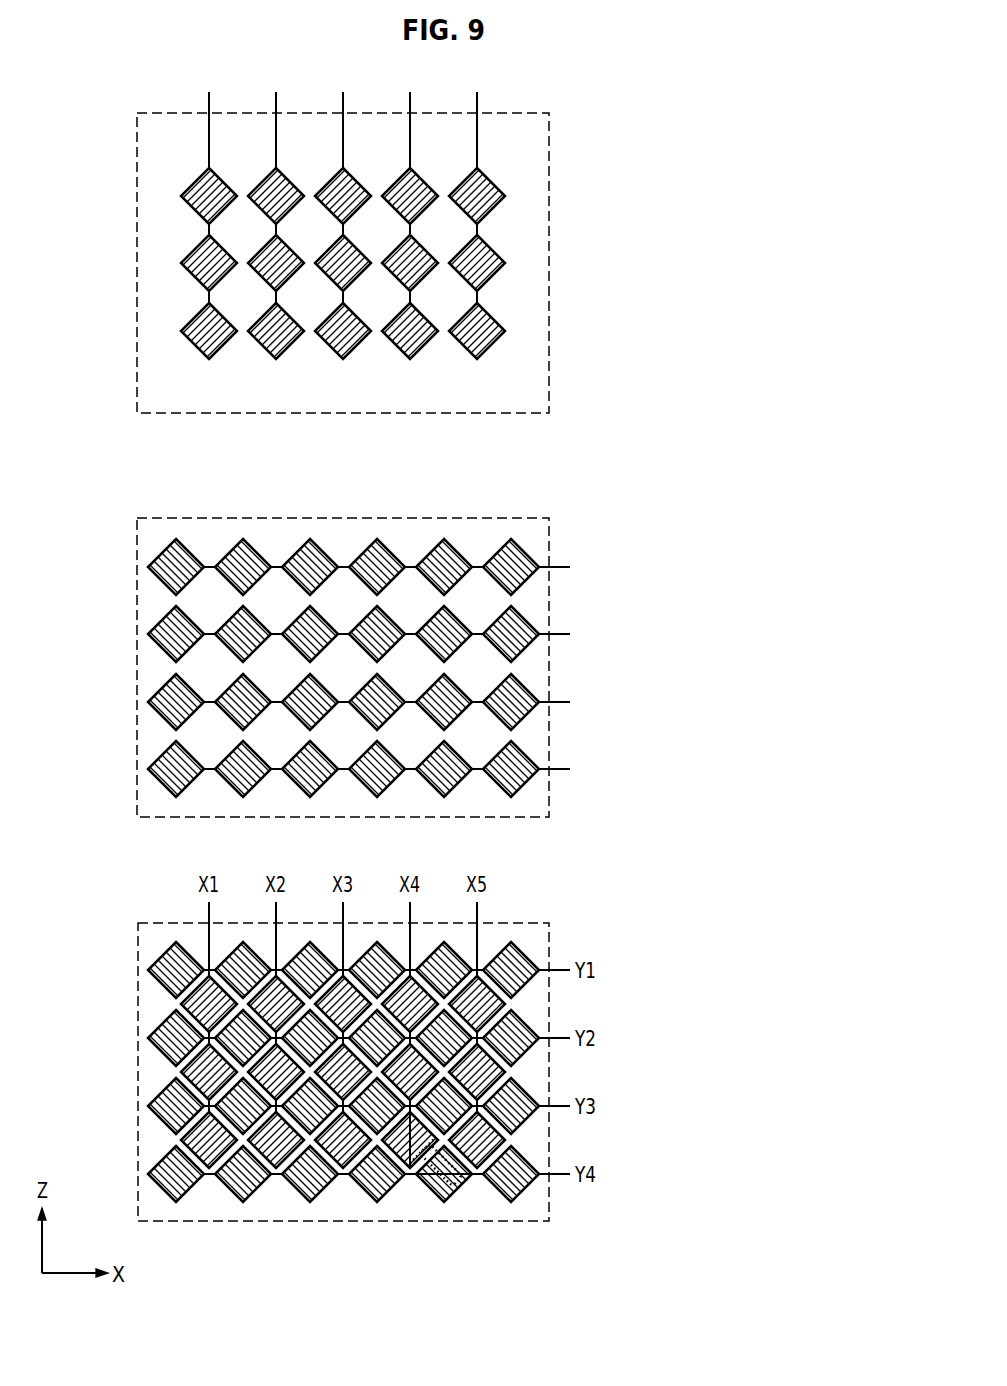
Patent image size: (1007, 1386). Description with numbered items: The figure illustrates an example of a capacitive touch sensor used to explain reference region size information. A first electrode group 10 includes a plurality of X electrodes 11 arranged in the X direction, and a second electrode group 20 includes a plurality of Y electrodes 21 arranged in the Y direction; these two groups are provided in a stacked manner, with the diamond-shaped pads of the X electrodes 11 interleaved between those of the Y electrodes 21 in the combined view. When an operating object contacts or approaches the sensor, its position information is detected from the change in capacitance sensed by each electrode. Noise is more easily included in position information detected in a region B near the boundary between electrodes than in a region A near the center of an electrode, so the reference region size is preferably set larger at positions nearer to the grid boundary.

The first electrode group 10 is at (535, 133).
The X electrode 11 is at (490, 258).
The second electrode group 20 is at (536, 541).
The Y electrode 21 is at (258, 560).
The region A is at (448, 1185).
The region B is at (419, 1170).